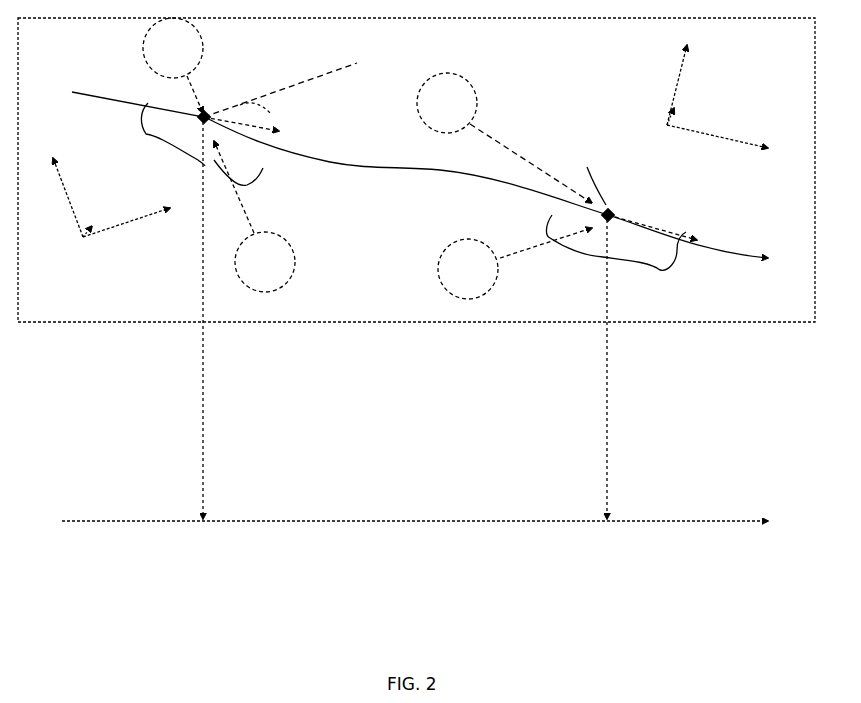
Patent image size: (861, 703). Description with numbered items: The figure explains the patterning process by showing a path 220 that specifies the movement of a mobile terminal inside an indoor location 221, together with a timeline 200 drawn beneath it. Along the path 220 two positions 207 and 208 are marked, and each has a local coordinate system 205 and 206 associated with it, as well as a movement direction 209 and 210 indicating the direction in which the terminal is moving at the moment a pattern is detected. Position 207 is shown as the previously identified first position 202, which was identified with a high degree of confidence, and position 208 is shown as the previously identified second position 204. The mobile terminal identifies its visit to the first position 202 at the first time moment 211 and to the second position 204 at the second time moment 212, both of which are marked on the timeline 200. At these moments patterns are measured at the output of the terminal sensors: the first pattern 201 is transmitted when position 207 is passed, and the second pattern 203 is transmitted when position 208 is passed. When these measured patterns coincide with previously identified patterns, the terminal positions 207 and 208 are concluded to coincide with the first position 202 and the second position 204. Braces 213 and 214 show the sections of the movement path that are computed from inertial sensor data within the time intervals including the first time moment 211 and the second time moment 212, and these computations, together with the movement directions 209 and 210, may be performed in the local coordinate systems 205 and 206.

The timeline 200 is at (415, 523).
The pattern C(t1) 201 is at (290, 282).
The position P1 202 is at (200, 30).
The pattern C(t2) 203 is at (465, 77).
The position P2 204 is at (490, 281).
The local coordinate system 205 is at (83, 240).
The local coordinate system 206 is at (668, 128).
The position 207 is at (222, 114).
The position 208 is at (611, 212).
The movement direction 209 is at (284, 133).
The movement direction 210 is at (683, 232).
The time moment t1 211 is at (197, 558).
The time moment t2 212 is at (600, 562).
The brace 213 is at (146, 134).
The brace 214 is at (668, 268).
The path 220 is at (418, 174).
The indoor location 221 is at (367, 322).